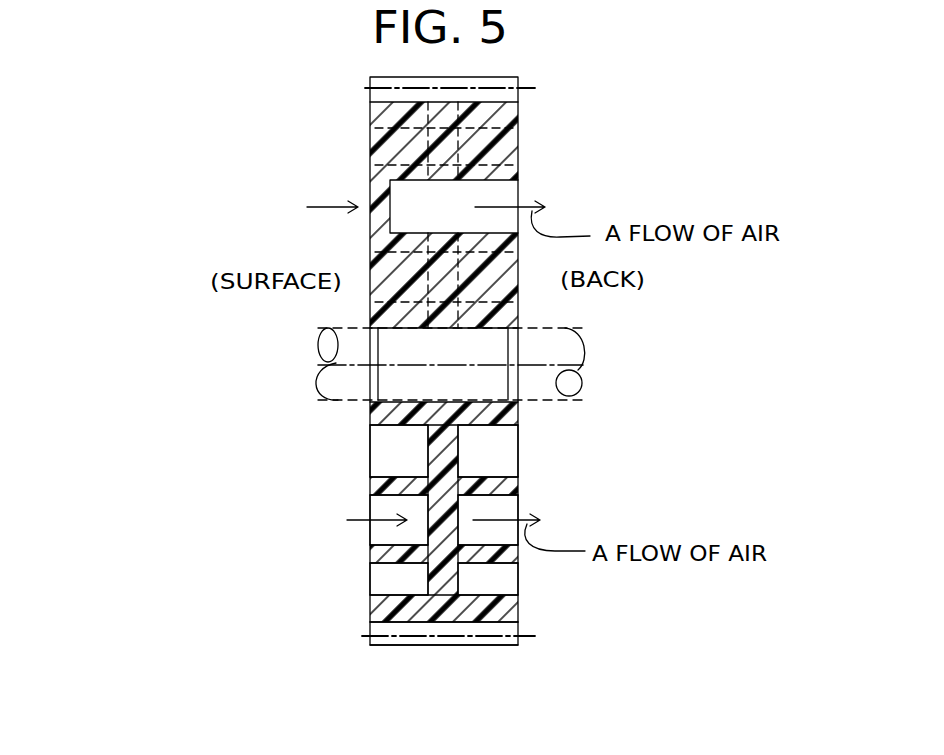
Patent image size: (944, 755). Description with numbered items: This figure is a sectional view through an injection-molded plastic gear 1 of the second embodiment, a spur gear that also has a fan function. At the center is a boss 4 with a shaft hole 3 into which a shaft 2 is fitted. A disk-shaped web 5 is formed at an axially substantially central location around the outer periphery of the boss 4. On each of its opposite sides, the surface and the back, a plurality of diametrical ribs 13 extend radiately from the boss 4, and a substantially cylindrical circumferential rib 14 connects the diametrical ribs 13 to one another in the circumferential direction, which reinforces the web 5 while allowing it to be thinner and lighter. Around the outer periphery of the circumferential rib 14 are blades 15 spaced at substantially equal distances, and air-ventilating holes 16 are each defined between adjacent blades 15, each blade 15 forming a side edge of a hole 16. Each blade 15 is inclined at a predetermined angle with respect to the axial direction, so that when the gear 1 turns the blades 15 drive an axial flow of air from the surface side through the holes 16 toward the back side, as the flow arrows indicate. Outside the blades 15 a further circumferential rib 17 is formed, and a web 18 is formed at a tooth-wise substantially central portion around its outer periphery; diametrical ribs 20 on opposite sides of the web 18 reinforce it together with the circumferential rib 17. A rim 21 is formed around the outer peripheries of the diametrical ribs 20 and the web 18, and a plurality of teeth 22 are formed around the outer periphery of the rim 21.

The injection-molded plastic gear 1 is at (524, 158).
The shaft 2 is at (566, 328).
The shaft hole 3 is at (480, 392).
The boss 4 is at (482, 428).
The web 5 is at (453, 458).
The diametrical ribs 13 is at (370, 444).
The circumferential rib 14 is at (380, 485).
The blades 15 is at (487, 535).
The air-ventilating holes 16 is at (495, 190).
The circumferential rib 17 is at (405, 587).
The web 18 is at (457, 567).
The diametrical ribs 20 is at (393, 565).
The rim 21 is at (458, 612).
The teeth 22 is at (490, 645).